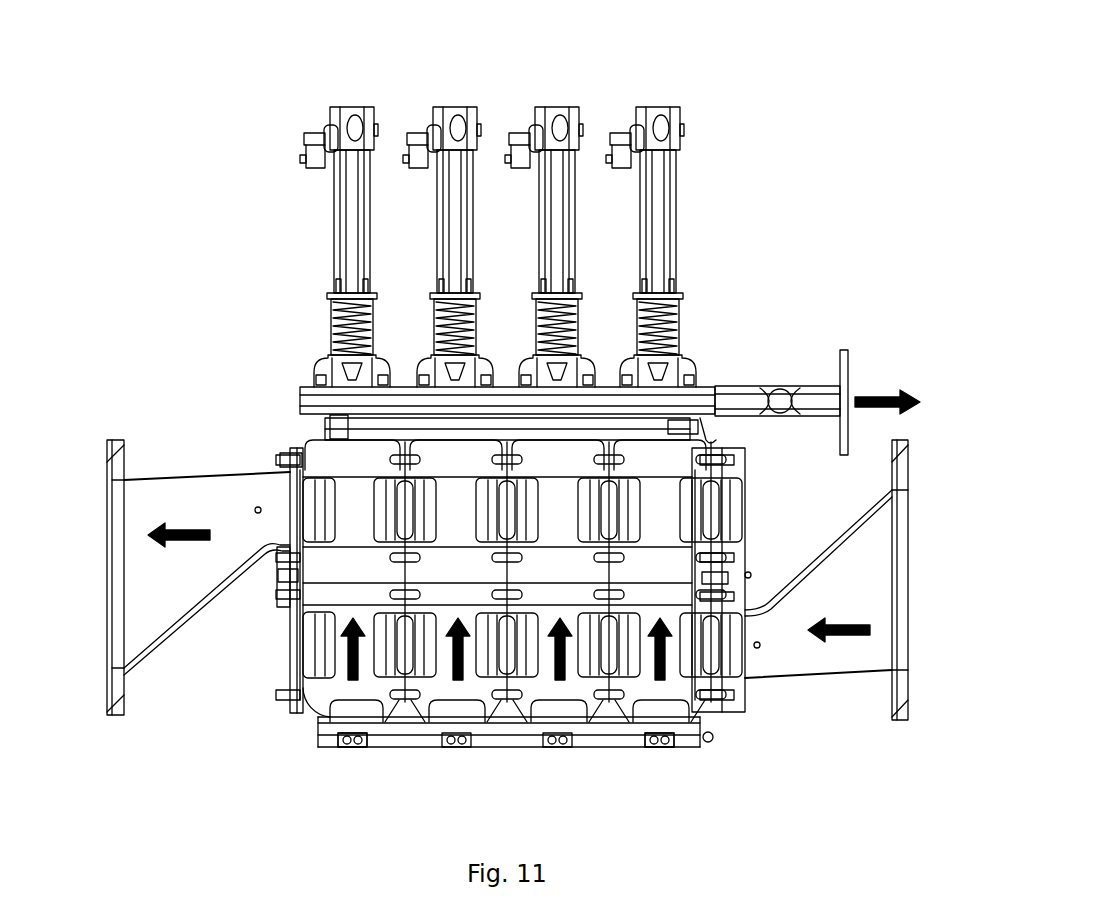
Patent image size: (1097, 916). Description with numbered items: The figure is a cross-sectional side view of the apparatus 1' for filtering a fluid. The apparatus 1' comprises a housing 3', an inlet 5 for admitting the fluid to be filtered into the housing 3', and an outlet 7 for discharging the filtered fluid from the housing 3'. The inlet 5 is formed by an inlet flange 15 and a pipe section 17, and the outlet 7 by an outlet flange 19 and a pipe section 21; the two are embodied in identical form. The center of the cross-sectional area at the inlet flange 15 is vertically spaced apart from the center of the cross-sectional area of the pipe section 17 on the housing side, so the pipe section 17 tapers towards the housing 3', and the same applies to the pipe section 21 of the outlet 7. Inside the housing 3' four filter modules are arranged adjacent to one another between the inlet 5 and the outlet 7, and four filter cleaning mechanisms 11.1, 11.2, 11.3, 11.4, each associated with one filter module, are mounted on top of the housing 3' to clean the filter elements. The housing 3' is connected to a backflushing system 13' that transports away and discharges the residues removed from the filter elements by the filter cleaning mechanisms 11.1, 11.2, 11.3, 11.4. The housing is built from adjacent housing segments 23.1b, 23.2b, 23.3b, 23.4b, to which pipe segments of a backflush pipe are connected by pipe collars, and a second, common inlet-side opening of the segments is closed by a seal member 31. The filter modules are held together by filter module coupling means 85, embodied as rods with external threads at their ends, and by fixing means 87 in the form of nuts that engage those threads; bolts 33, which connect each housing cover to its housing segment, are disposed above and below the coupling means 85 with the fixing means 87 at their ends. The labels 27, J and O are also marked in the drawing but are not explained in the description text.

The apparatus 1' is at (503, 417).
The filter cleaning mechanism 11.1 is at (315, 106).
The filter cleaning mechanism 11.2 is at (425, 94).
The filter cleaning mechanism 11.3 is at (529, 98).
The filter cleaning mechanism 11.4 is at (631, 94).
The backflushing system 13' is at (817, 381).
The bolts 33 is at (380, 440).
The bolt 27 is at (348, 478).
The pipe section 21 is at (221, 476).
The outlet 7 is at (167, 556).
The outlet flange 19 is at (110, 470).
The seal member 31 is at (712, 537).
The inlet 5 is at (853, 582).
The inlet flange 15 is at (896, 585).
The pipe section 17 is at (823, 680).
The joint J is at (709, 432).
The housing 3' is at (466, 593).
The housing segment 23.1b is at (490, 455).
The housing segment 23.2b is at (585, 478).
The housing segment 23.3b is at (600, 640).
The housing segment 23.4b is at (690, 650).
The filter module coupling means 85 is at (410, 700).
The fixing means 87 is at (685, 735).
The opening O is at (708, 737).